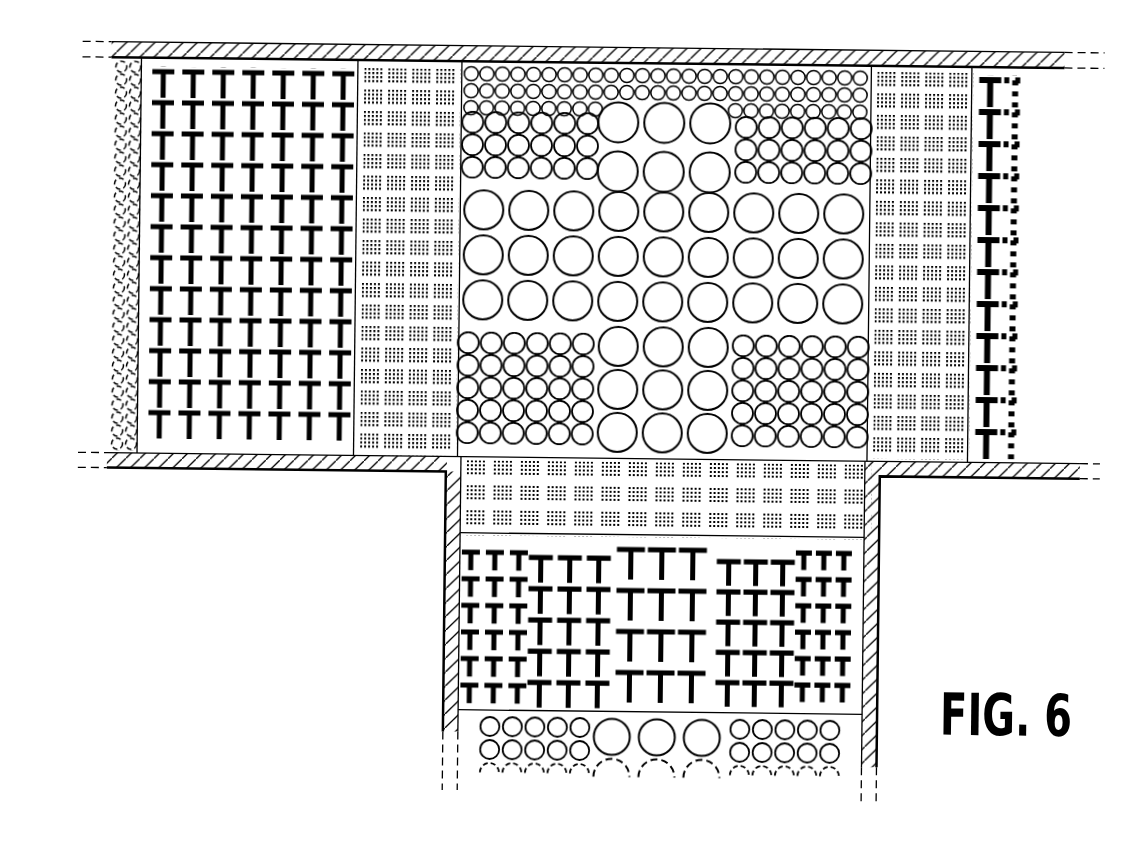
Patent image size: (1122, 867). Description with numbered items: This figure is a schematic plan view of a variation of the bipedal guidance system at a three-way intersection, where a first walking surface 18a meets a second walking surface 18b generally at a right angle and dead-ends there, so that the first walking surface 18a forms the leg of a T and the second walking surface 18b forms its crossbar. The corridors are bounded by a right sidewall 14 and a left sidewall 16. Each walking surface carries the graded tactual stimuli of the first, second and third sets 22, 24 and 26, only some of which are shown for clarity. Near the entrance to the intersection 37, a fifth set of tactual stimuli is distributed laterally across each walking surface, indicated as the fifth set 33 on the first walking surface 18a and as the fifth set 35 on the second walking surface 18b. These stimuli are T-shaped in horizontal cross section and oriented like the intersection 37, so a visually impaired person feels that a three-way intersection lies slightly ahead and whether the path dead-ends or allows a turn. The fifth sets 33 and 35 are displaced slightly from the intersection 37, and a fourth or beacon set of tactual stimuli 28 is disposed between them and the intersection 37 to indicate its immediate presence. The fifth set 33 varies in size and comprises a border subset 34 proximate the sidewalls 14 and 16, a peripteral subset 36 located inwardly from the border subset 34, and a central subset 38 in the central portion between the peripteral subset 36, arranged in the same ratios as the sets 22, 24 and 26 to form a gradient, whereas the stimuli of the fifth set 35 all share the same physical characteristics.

The right sidewall 14 is at (970, 471).
The left sidewall 16 is at (199, 46).
The first walking surface 18a is at (821, 541).
The second walking surface 18b is at (113, 422).
The first set of tactual stimuli 22 is at (125, 451).
The second set of tactual stimuli 24 is at (92, 366).
The third set of tactual stimuli 26 is at (103, 296).
The fourth set of tactual stimuli 28 is at (373, 69).
The fifth set of tactual stimuli 33 is at (857, 600).
The border subset 34 is at (472, 600).
The fifth set of tactual stimuli 35 is at (253, 94).
The peripteral subset 36 is at (303, 450).
The intersection 37 is at (634, 120).
The central subset 38 is at (692, 645).